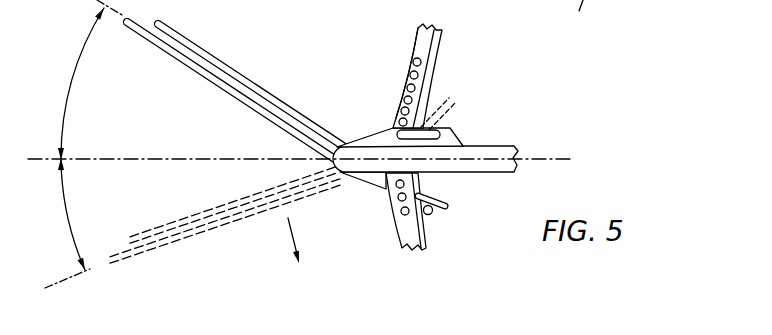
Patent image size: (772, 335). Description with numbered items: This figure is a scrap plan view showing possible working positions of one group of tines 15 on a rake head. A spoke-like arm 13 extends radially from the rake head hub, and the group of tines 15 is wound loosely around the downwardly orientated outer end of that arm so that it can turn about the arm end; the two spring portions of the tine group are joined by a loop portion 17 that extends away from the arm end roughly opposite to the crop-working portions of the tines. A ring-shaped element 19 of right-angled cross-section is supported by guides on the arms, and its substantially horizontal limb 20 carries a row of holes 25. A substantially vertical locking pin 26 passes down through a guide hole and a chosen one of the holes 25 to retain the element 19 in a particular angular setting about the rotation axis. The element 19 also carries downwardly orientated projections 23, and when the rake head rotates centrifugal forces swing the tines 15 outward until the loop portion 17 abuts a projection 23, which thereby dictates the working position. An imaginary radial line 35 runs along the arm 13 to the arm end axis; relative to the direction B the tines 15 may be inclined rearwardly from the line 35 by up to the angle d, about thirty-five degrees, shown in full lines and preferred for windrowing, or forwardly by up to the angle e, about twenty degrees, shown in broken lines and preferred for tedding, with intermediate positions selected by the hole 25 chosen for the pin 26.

The spoke-like arm 13 is at (497, 147).
The group of tines 15 is at (169, 28).
The loop portion 17 is at (452, 97).
The ring-shaped element 19 is at (447, 48).
The substantially horizontal limb 20 is at (415, 37).
The downwardly orientated projection 23 is at (432, 213).
The holes 25 is at (404, 71).
The locking pin 26 is at (443, 133).
The imaginary radial line 35 is at (170, 159).
The angle d is at (69, 98).
The angle e is at (70, 220).
The direction B is at (289, 231).